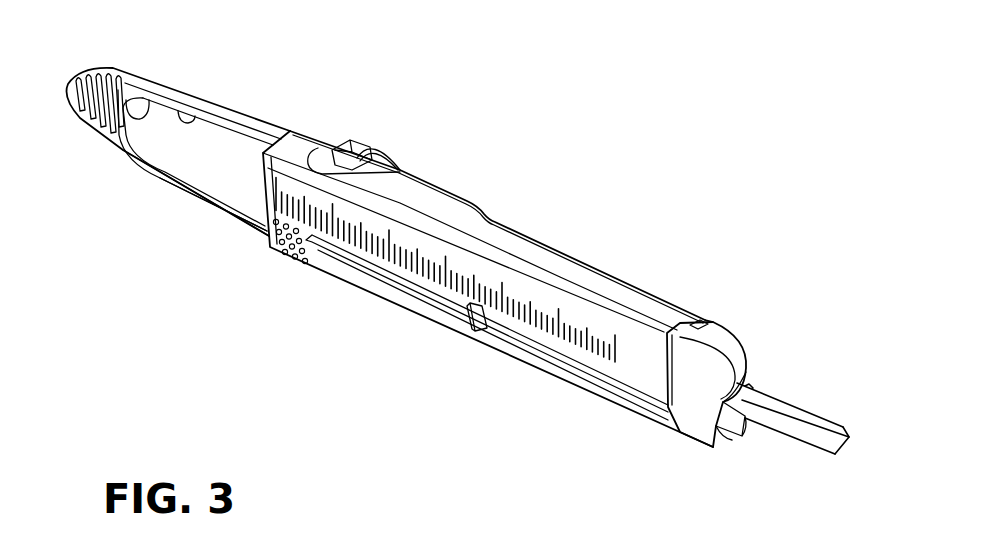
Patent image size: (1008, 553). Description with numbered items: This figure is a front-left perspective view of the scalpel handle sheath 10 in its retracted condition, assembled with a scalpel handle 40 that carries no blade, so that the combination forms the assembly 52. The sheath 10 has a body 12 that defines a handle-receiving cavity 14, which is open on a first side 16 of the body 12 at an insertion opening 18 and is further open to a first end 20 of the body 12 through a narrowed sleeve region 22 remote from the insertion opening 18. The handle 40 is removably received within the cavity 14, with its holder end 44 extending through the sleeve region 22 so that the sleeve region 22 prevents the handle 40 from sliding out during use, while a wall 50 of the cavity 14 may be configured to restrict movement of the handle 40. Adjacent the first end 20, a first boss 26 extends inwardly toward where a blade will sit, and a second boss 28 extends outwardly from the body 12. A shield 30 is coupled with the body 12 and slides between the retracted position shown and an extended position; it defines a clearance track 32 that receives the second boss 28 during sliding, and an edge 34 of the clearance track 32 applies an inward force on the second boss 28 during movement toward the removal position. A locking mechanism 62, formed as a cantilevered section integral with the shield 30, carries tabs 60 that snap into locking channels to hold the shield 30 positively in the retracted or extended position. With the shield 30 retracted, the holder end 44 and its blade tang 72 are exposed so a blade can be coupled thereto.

The scalpel handle sheath 10 is at (496, 152).
The body 12 is at (248, 117).
The handle-receiving cavity 14 is at (250, 203).
The first side 16 is at (130, 153).
The insertion opening 18 is at (181, 113).
The first end 20 is at (722, 350).
The sleeve region 22 is at (752, 371).
The first boss 26 is at (743, 419).
The second boss 28 is at (725, 440).
The shield 30 is at (633, 302).
The clearance track 32 is at (584, 368).
The edge 34 is at (480, 333).
The handle 40 is at (190, 175).
The holder end 44 is at (843, 441).
The wall 50 is at (148, 97).
The assembly 52 is at (594, 161).
The tabs 60 is at (347, 138).
The locking mechanism 62 is at (402, 156).
The blade tang 72 is at (773, 388).